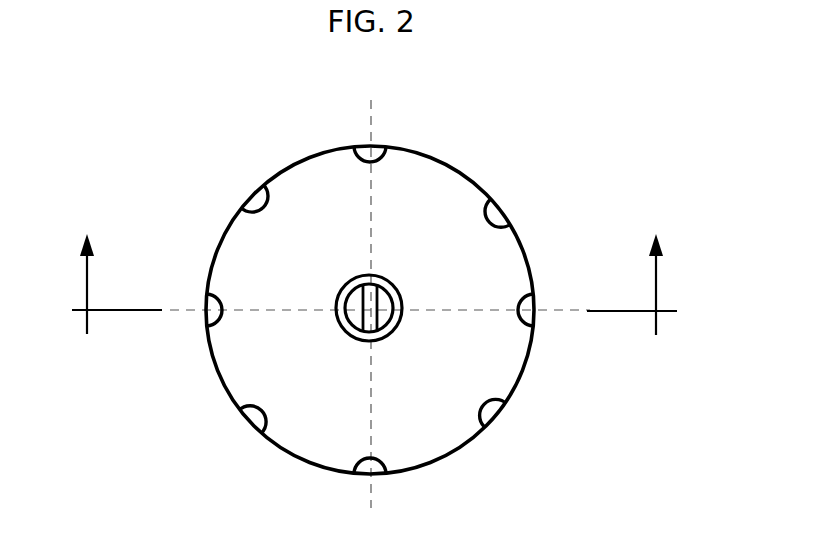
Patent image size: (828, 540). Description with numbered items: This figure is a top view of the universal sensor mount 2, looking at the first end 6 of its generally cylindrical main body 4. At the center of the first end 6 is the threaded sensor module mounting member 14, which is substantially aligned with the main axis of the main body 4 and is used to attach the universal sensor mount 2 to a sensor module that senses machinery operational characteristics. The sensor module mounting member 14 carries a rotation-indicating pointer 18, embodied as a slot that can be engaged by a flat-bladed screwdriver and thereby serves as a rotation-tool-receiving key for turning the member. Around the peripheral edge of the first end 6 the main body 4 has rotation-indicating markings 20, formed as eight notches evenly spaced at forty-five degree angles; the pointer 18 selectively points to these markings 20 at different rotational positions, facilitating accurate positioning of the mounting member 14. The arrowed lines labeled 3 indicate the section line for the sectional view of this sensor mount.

The universal sensor mount 2 is at (205, 145).
The section line 3- 3 is at (371, 290).
The main body 4 is at (227, 392).
The first end 6 is at (426, 190).
The sensor module mounting member 14 is at (402, 305).
The rotation-indicating pointer 18 is at (402, 305).
The rotation-indicating markings 20 is at (497, 210).